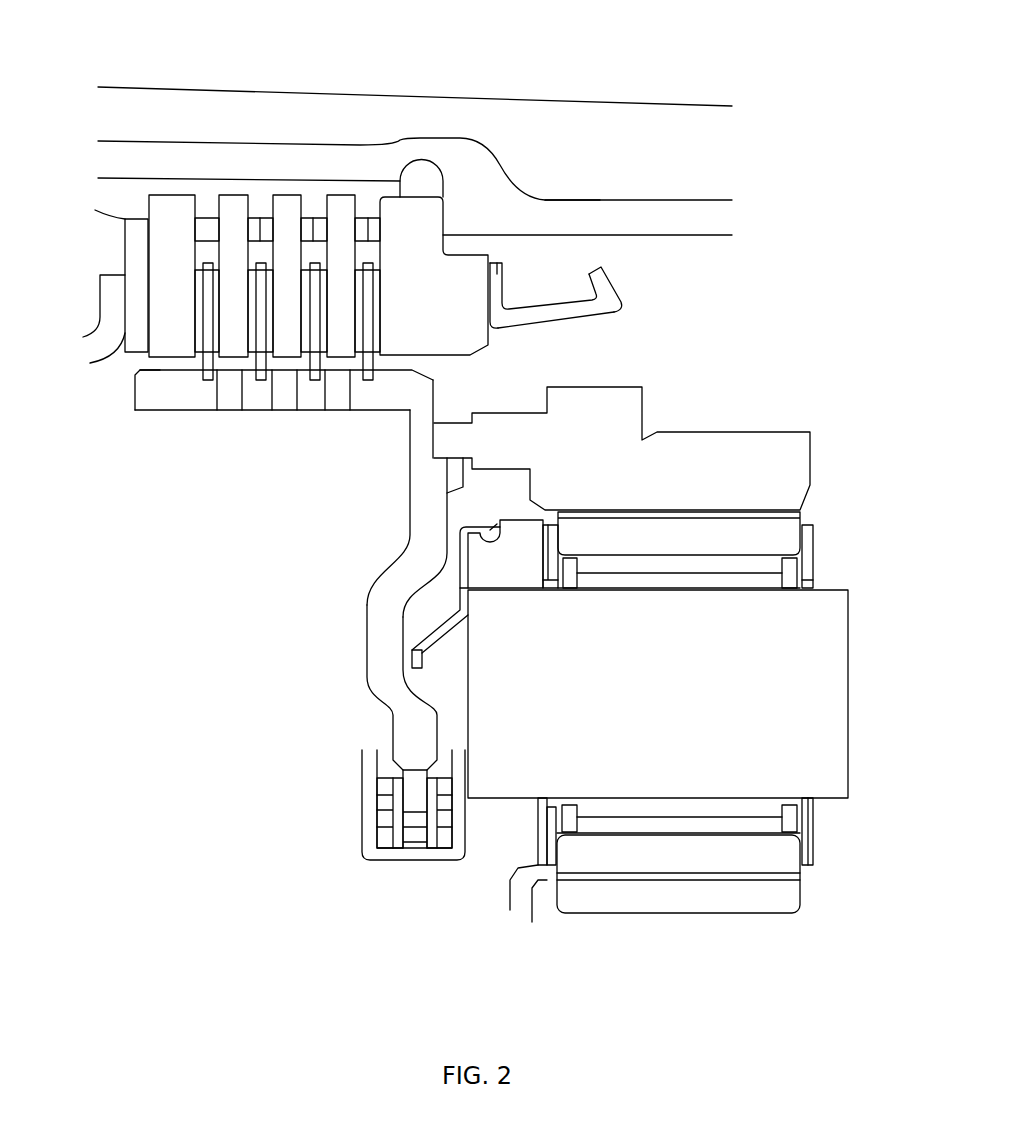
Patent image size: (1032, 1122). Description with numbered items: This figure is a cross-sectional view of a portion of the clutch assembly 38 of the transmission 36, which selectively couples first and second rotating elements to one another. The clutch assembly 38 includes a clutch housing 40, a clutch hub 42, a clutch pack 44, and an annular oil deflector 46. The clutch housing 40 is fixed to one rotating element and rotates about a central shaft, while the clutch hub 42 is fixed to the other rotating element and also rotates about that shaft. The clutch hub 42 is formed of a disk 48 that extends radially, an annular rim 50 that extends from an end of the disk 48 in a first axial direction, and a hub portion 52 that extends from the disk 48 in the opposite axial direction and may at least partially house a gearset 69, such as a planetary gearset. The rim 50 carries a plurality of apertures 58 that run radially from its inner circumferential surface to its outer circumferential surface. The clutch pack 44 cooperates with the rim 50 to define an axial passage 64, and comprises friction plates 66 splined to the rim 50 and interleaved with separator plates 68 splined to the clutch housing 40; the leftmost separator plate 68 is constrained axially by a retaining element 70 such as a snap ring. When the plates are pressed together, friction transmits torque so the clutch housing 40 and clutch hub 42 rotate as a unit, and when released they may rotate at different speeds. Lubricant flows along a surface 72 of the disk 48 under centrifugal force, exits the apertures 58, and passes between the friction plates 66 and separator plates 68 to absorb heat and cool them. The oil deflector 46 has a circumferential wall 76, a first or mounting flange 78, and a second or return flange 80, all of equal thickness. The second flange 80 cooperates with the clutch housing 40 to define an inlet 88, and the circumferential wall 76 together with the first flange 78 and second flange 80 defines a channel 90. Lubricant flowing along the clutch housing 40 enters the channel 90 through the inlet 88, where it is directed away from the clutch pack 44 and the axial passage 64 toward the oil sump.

The transmission 36 is at (657, 80).
The clutch assembly 38 is at (111, 399).
The clutch housing 40 is at (363, 188).
The clutch hub 42 is at (348, 637).
The clutch pack 44 is at (118, 236).
The annular oil deflector 46 is at (630, 322).
The disk 48 is at (412, 518).
The annular rim 50 is at (141, 402).
The hub portion 52 is at (512, 420).
The apertures 58 is at (226, 398).
The axial passage 64 is at (393, 362).
The friction plates 66 is at (207, 265).
The separator plates 68 is at (285, 205).
The gearset 69 is at (842, 708).
The retaining element 70 is at (112, 295).
The surface 72 is at (410, 540).
The circumferential wall 76 is at (575, 312).
The first or mounting flange 78 is at (496, 272).
The second or return flange 80 is at (611, 290).
The inlet 88 is at (590, 253).
The channel 90 is at (547, 270).